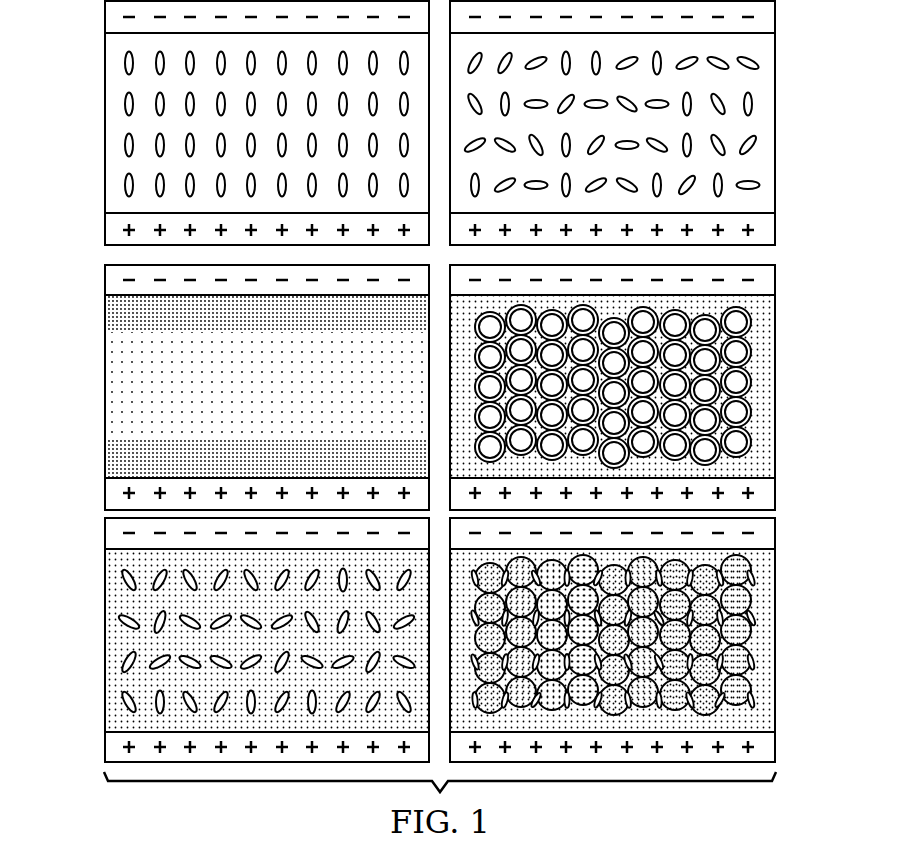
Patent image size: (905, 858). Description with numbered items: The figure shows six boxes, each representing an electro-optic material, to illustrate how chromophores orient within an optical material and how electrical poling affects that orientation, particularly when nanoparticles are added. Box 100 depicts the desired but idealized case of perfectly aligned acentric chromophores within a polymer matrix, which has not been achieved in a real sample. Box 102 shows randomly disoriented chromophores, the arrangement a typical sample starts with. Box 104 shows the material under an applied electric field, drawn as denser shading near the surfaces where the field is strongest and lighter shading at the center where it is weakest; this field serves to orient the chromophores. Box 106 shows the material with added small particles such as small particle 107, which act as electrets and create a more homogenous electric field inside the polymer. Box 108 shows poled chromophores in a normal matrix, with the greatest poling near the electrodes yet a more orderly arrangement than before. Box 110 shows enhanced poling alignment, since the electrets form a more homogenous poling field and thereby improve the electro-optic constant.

The box 100 is at (103, 122).
The box 102 is at (777, 122).
The box 104 is at (103, 387).
The box 106 is at (652, 387).
The small particle 107 is at (752, 410).
The box 108 is at (103, 642).
The box 110 is at (777, 642).